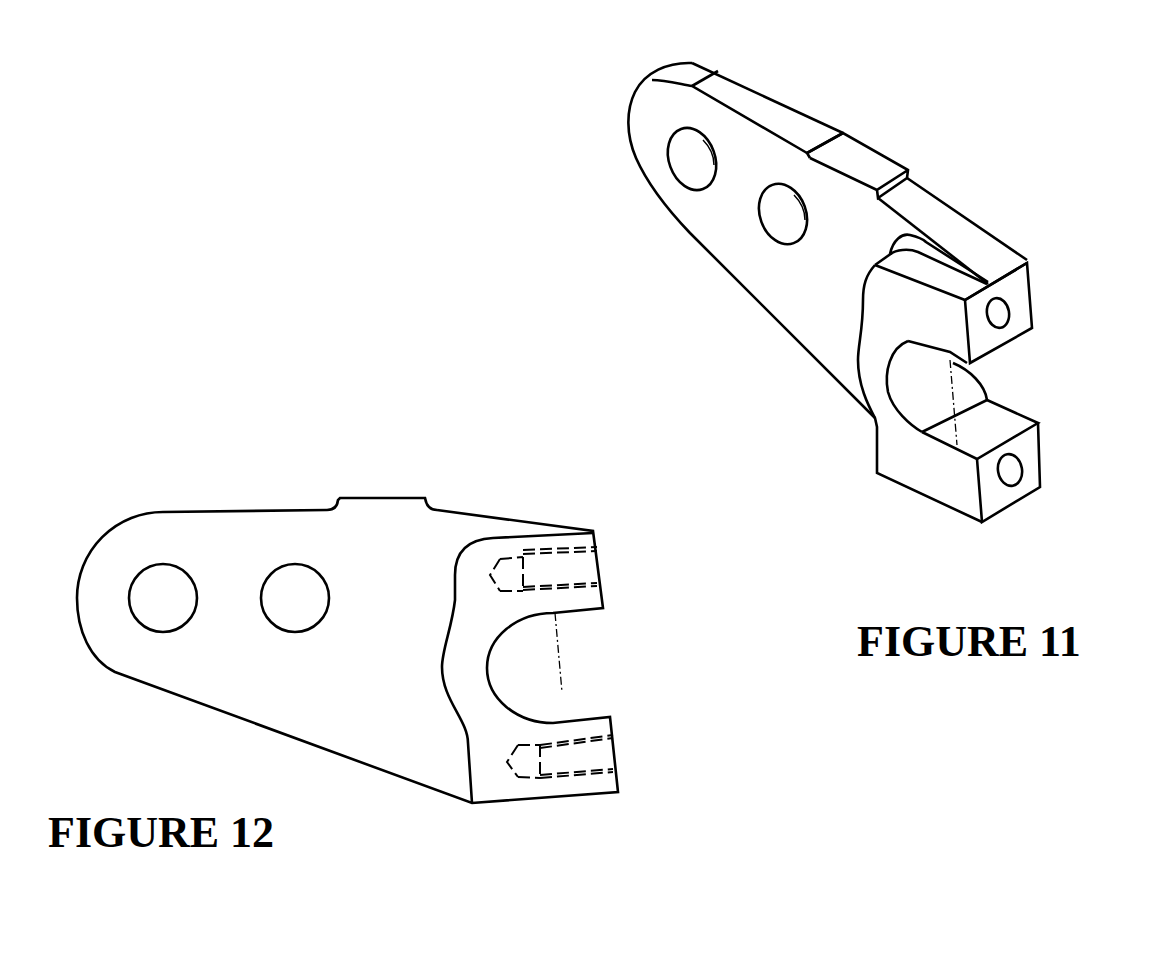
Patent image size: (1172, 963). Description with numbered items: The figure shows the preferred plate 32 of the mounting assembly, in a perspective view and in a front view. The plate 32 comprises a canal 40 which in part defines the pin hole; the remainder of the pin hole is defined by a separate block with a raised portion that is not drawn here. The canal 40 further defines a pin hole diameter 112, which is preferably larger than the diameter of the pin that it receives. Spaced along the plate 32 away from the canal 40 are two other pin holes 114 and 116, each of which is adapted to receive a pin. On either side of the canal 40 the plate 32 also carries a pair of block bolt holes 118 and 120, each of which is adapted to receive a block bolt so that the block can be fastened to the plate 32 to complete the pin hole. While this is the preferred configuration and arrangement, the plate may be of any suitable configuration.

In FIG. 11, the plate 32 is at (865, 152).
In FIG. 12, the plate 32 is at (375, 497).
In FIG. 11, the pin hole 114 is at (695, 163).
In FIG. 12, the pin hole 114 is at (155, 602).
In FIG. 11, the pin hole 116 is at (785, 222).
In FIG. 12, the pin hole 116 is at (290, 573).
In FIG. 11, the block bolt hole 118 is at (1002, 310).
In FIG. 12, the block bolt hole 118 is at (590, 567).
In FIG. 11, the block bolt hole 120 is at (1013, 473).
In FIG. 12, the block bolt hole 120 is at (610, 757).
In FIG. 11, the canal 40 is at (1012, 376).
In FIG. 12, the canal 40 is at (592, 670).
In FIG. 11, the pin hole diameter 112 is at (950, 403).
In FIG. 12, the pin hole diameter 112 is at (553, 677).